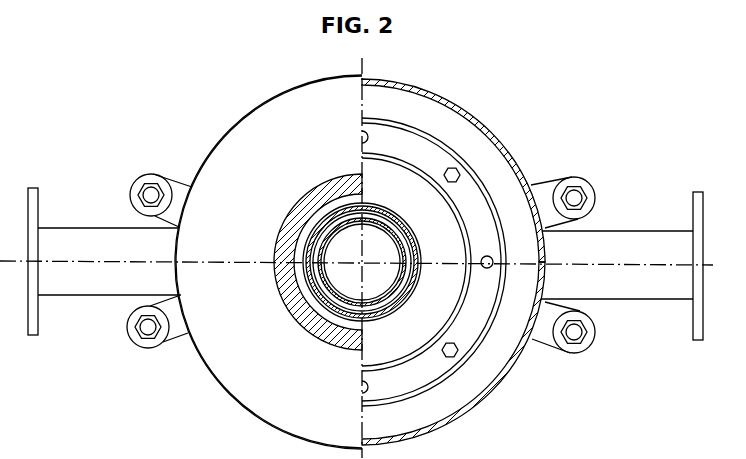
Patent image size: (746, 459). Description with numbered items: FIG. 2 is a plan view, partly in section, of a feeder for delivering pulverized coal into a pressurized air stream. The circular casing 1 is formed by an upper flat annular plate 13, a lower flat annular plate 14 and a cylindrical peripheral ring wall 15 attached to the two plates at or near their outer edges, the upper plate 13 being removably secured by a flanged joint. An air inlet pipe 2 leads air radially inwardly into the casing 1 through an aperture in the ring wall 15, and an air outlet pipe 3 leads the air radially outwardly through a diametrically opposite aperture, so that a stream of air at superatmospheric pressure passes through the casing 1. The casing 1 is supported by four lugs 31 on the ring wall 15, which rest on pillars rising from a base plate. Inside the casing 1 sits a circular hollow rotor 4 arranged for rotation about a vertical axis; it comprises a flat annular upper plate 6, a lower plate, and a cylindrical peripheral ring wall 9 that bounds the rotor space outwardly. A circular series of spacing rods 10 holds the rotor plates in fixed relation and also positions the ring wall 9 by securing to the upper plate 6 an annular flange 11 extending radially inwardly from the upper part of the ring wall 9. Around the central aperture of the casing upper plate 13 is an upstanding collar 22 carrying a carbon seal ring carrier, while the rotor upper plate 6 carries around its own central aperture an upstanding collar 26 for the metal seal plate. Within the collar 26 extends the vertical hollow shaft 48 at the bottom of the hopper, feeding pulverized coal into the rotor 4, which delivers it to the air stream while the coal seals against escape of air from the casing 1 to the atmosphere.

The circular casing 1 is at (265, 116).
The air inlet pipe 2 is at (657, 287).
The air outlet pipe 3 is at (98, 277).
The circular hollow rotor 4 is at (478, 220).
The flat annular upper plate 6 is at (405, 338).
The cylindrical peripheral ring wall 9 is at (487, 187).
The spacing rods 10 is at (371, 139).
The annular flange 11 is at (425, 152).
The upper flat annular plate 13 is at (229, 149).
The lower flat annular plate 14 is at (463, 398).
The cylindrical peripheral ring wall 15 is at (431, 93).
The upstanding collar 22 is at (288, 214).
The upstanding collar 26 is at (401, 214).
The lugs 31 is at (132, 188).
The vertical hollow shaft 48 is at (394, 283).